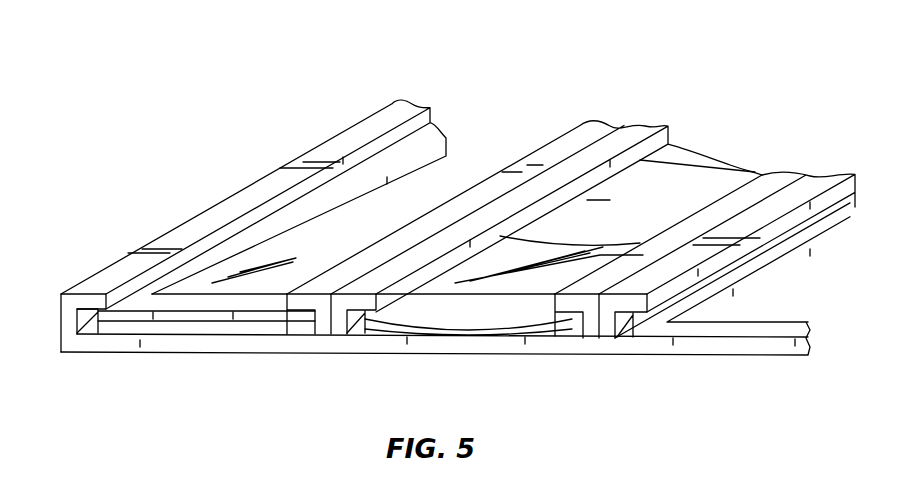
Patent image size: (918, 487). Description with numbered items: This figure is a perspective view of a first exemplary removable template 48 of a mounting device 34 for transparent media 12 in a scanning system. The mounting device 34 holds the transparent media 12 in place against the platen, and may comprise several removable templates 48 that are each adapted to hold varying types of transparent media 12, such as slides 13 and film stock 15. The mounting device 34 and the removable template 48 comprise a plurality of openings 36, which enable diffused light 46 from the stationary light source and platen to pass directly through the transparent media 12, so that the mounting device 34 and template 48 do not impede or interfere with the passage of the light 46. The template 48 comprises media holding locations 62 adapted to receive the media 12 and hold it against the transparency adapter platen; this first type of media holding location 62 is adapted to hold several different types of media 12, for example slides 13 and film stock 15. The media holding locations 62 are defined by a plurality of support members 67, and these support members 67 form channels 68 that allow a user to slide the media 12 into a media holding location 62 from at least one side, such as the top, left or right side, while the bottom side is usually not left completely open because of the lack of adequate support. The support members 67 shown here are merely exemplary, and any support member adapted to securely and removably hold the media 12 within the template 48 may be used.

The transparent media 12 is at (453, 187).
The slide 13 is at (297, 240).
The film stock 15 is at (652, 175).
The mounting device 34 is at (253, 204).
The removable template 48 is at (184, 178).
The openings 36 is at (820, 308).
The diffused light 46 is at (437, 88).
The media holding location 62 is at (198, 360).
The support members 67 is at (84, 297).
The channels 68 is at (88, 320).